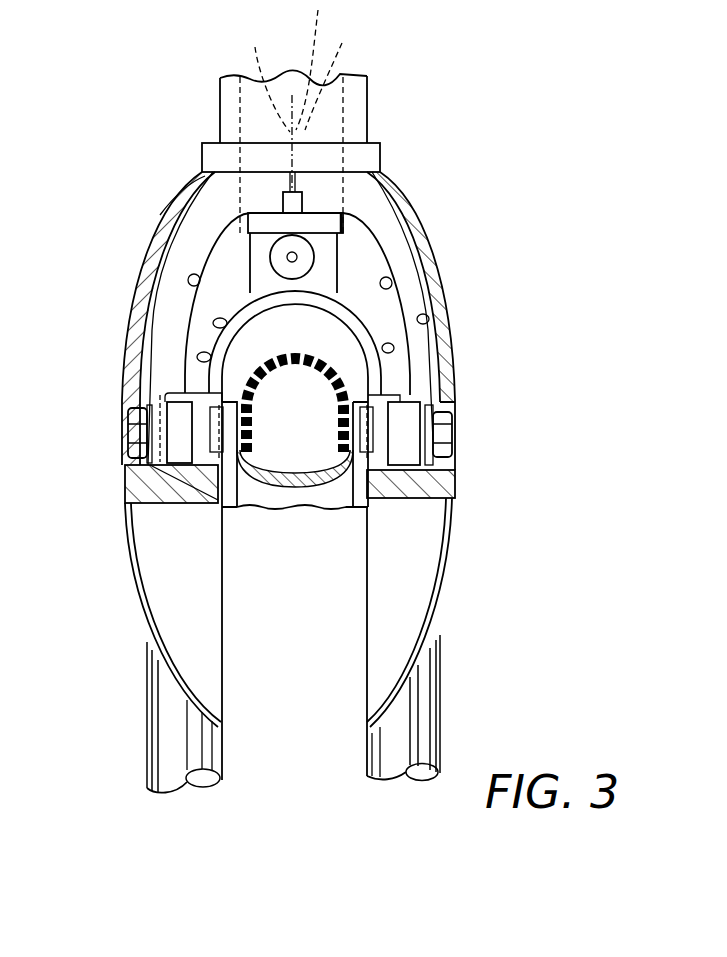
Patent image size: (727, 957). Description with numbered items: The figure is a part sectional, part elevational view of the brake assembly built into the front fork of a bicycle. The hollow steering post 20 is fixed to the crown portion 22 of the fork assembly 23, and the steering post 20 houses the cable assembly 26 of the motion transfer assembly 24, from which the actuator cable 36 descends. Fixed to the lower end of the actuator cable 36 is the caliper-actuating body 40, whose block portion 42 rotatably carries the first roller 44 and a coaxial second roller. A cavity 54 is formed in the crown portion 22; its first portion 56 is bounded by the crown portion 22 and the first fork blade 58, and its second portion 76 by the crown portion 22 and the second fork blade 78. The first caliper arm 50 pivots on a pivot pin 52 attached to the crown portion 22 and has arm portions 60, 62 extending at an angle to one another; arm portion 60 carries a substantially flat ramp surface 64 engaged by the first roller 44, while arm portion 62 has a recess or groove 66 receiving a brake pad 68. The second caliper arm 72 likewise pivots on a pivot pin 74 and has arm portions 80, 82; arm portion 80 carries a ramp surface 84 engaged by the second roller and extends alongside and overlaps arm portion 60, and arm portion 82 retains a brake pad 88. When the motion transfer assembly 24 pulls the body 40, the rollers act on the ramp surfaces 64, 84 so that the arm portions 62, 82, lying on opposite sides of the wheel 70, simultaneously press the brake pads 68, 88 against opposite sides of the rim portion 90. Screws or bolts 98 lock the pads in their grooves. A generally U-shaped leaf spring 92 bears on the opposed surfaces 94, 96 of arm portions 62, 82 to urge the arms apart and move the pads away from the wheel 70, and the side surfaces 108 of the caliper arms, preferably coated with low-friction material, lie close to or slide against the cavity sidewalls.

The steering post 20 is at (367, 97).
The crown portion 22 is at (200, 180).
The fork assembly 23 is at (127, 557).
The motion transfer assembly 24 is at (323, 119).
The cable assembly 26 is at (256, 132).
The actuator cable 36 is at (341, 82).
The caliper-actuating body 40 is at (320, 215).
The block portion 42 is at (300, 231).
The first roller 44 is at (310, 261).
The first caliper arm 50 is at (188, 276).
The pivot pin 52 is at (188, 250).
The cavity 54 is at (208, 200).
The first portion of cavity 56 is at (158, 330).
The first fork blade 58 is at (162, 730).
The arm portion 60 is at (278, 212).
The arm portion 62 is at (125, 391).
The ramp surface 64 is at (312, 244).
The recess or groove 66 is at (175, 422).
The brake pad 68 is at (132, 505).
The wheel 70 is at (313, 500).
The second caliper arm 72 is at (417, 307).
The pivot pin 74 is at (393, 283).
The second portion of cavity 76 is at (430, 329).
The second fork blade 78 is at (457, 477).
The arm portion 80 is at (235, 168).
The arm portion 82 is at (427, 384).
The ramp surface 84 is at (243, 233).
The brake pad 88 is at (410, 424).
The rim portion 90 is at (370, 452).
The leaf spring 92 is at (198, 358).
The opposed surface 94 is at (213, 323).
The opposed surface 96 is at (393, 352).
The screws or bolts 98 is at (126, 433).
The side surfaces 108 is at (160, 376).